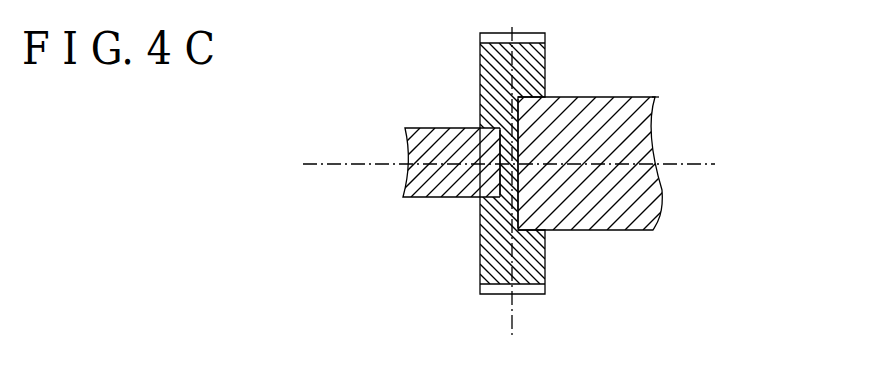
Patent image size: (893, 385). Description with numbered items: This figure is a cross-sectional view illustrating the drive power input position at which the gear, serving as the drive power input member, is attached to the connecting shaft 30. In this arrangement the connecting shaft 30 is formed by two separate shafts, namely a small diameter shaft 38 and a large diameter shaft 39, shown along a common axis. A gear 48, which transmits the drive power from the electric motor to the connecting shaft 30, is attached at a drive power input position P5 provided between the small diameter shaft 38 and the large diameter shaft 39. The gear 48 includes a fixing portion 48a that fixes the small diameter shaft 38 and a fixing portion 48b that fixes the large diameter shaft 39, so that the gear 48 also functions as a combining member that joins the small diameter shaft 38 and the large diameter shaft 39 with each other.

The connecting shaft 30 is at (695, 100).
The small diameter shaft 38 is at (416, 128).
The large diameter shaft 39 is at (628, 96).
The gear 48 is at (545, 61).
The fixing portion 48a is at (560, 130).
The fixing portion 48b is at (592, 108).
The drive power input position P5 is at (514, 328).